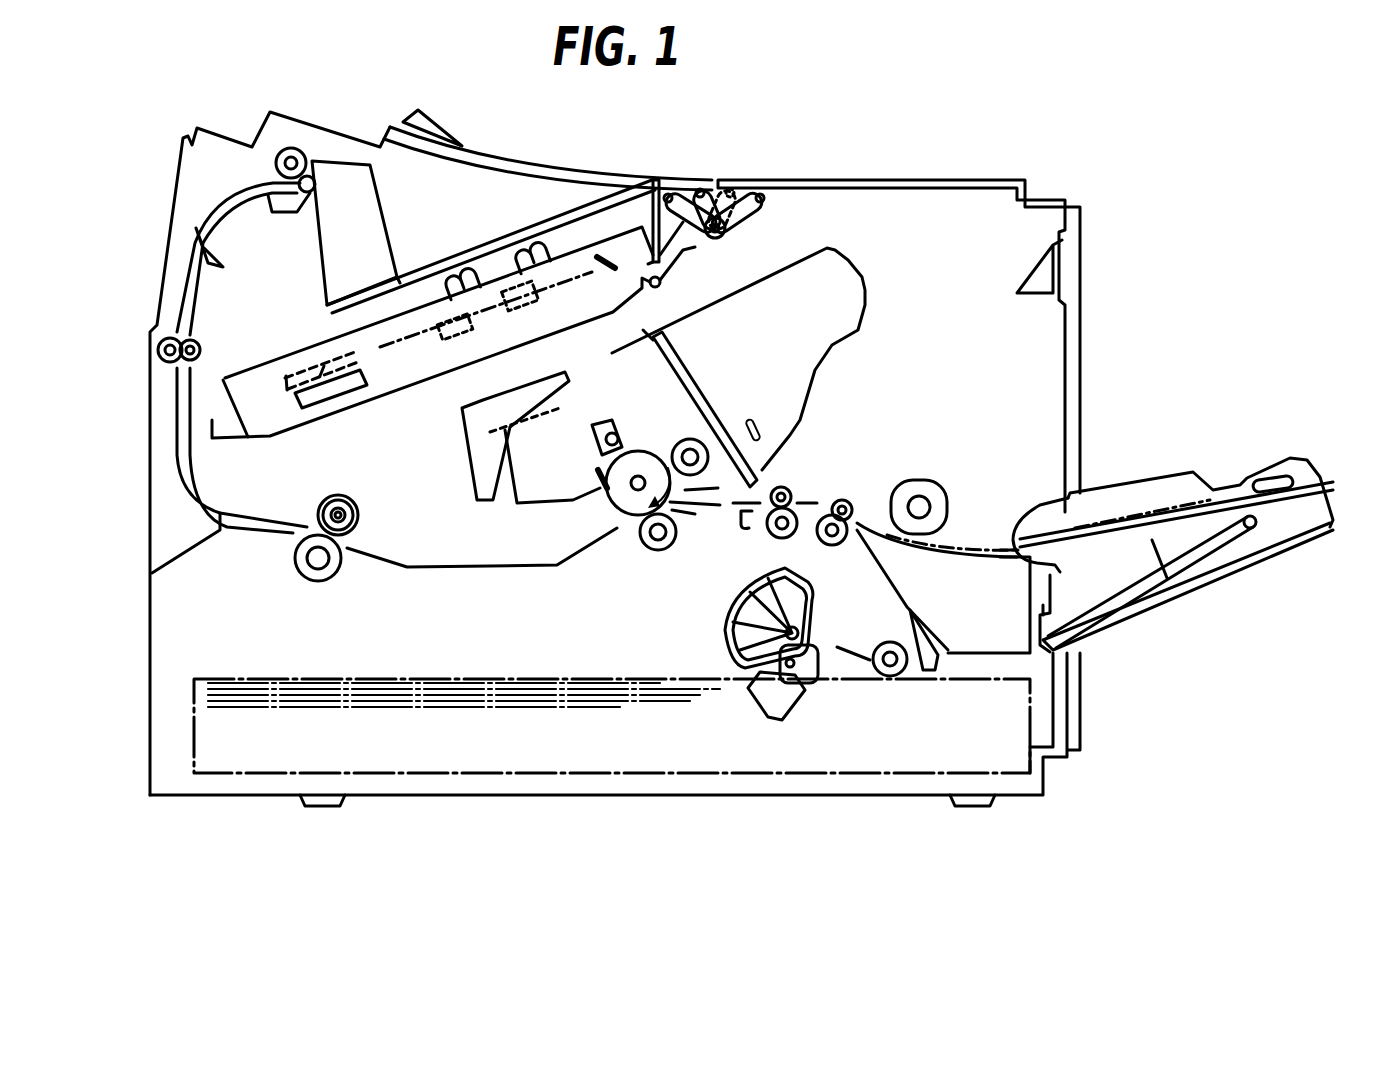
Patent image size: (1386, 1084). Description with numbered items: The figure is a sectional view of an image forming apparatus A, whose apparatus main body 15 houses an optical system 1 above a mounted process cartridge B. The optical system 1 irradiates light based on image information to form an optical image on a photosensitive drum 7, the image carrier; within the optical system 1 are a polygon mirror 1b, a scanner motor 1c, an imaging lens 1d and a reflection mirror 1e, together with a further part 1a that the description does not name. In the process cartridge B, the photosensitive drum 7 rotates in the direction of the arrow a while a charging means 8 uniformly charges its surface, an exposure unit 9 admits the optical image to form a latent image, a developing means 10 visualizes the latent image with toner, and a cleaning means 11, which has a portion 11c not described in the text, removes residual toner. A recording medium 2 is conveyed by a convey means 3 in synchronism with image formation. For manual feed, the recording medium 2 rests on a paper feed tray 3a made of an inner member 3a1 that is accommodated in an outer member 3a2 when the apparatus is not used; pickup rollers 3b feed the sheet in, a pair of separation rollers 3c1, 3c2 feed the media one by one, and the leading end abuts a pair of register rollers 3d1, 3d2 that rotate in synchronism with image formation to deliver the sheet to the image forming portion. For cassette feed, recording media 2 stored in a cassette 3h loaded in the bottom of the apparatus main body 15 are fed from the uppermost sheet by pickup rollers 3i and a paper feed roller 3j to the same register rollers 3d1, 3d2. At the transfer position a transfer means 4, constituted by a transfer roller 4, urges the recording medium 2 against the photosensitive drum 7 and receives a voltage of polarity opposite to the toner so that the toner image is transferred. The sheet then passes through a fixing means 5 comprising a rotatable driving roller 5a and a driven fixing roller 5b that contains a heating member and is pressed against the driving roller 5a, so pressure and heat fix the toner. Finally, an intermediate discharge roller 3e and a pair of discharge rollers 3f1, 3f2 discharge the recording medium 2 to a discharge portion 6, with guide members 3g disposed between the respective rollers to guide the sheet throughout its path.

The image forming apparatus A is at (903, 176).
The process cartridge B is at (858, 262).
The drum rotation direction arrow a is at (638, 483).
The optical system 1 is at (348, 408).
The developing unit frame 1a is at (398, 392).
The polygon mirror 1b is at (298, 362).
The scanner motor 1c is at (302, 430).
The imaging lens 1d is at (470, 330).
The reflection mirror 1e is at (632, 448).
The recording medium 2 is at (958, 540).
The convey means 3 is at (698, 525).
The paper feed tray 3a is at (1130, 492).
The inner member 3a1 is at (1188, 545).
The outer member 3a2 is at (1318, 464).
The pickup rollers 3b is at (922, 492).
The separation roller 3c1 is at (831, 545).
The separation roller 3c2 is at (842, 499).
The register roller 3d1 is at (775, 536).
The register roller 3d2 is at (786, 487).
The intermediate discharge roller 3e is at (190, 360).
The discharge roller 3f1 is at (295, 214).
The discharge roller 3f2 is at (291, 147).
The guide members 3g is at (220, 262).
The cassette 3h is at (612, 776).
The pickup rollers 3i is at (722, 632).
The paper feed roller 3j is at (882, 674).
The transfer roller 4 is at (642, 540).
The fixing means 5 is at (352, 562).
The driving roller 5a is at (297, 556).
The fixing roller 5b is at (350, 508).
The discharge portion 6 is at (458, 247).
The photosensitive drum 7 is at (600, 508).
The charging means 8 is at (615, 425).
The exposure unit 9 is at (625, 350).
The developing means 10 is at (682, 433).
The cleaning means 11 is at (586, 460).
The cleaning container 11c is at (510, 505).
The apparatus main body 15 is at (460, 797).